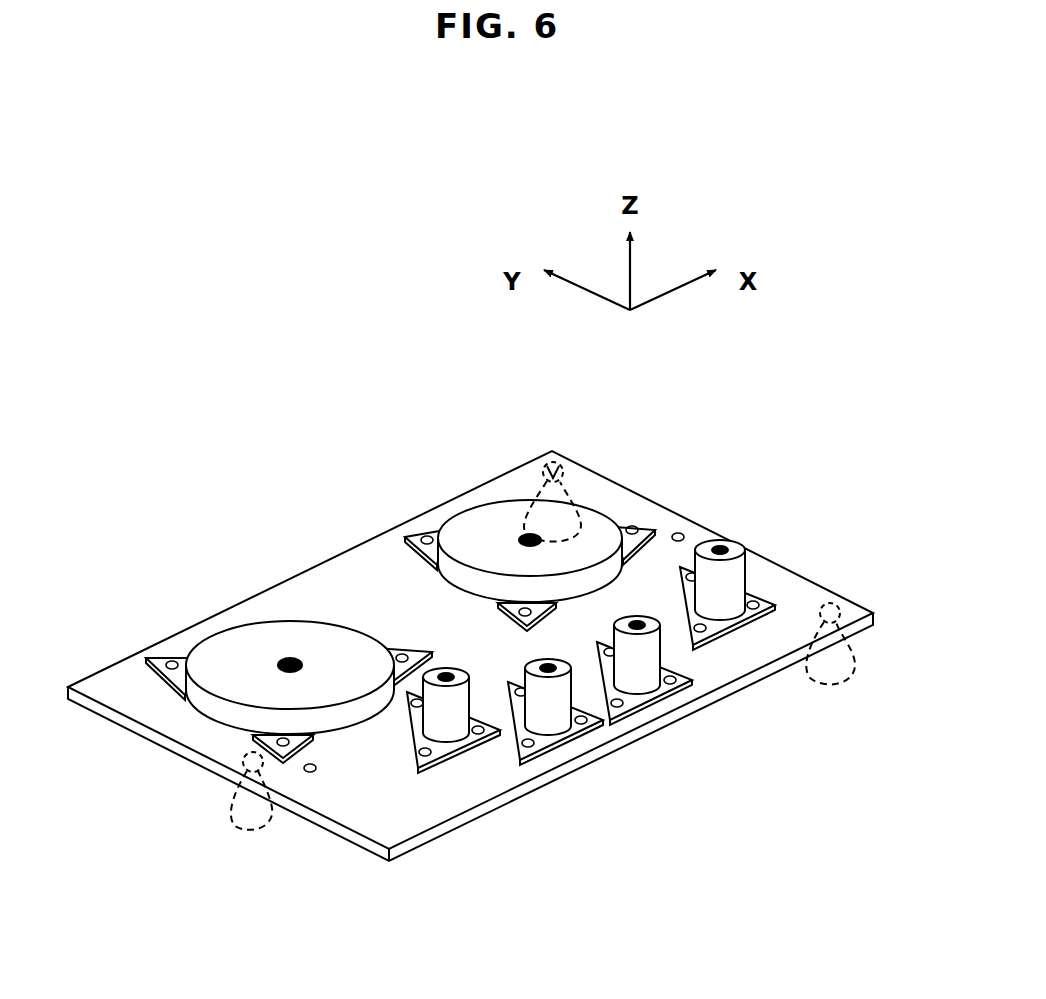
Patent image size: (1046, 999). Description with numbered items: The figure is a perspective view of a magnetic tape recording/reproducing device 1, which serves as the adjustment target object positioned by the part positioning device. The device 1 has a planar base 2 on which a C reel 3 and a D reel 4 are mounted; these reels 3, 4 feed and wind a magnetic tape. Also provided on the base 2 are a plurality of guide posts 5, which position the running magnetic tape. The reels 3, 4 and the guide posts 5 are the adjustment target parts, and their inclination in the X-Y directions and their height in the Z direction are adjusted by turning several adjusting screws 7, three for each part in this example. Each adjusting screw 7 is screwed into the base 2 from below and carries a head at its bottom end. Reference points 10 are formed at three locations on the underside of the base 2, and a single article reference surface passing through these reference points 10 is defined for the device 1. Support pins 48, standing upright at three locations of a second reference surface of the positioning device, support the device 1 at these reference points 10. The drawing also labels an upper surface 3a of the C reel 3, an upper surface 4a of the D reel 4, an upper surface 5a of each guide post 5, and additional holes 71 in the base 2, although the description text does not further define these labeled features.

The magnetic tape recording/reproducing device 1 is at (494, 652).
The planar base 2 is at (295, 598).
The C reel 3 is at (254, 632).
The upper surface of first actuator 3a is at (245, 640).
The D reel 4 is at (527, 481).
The upper surface of second actuator 4a is at (500, 518).
The guide post 5 is at (590, 684).
The upper surface of sensor 5a is at (447, 675).
The adjusting screw 7 is at (427, 536).
The reference point 10 is at (560, 462).
The support pin 48 is at (575, 495).
The through hole 71 is at (680, 533).